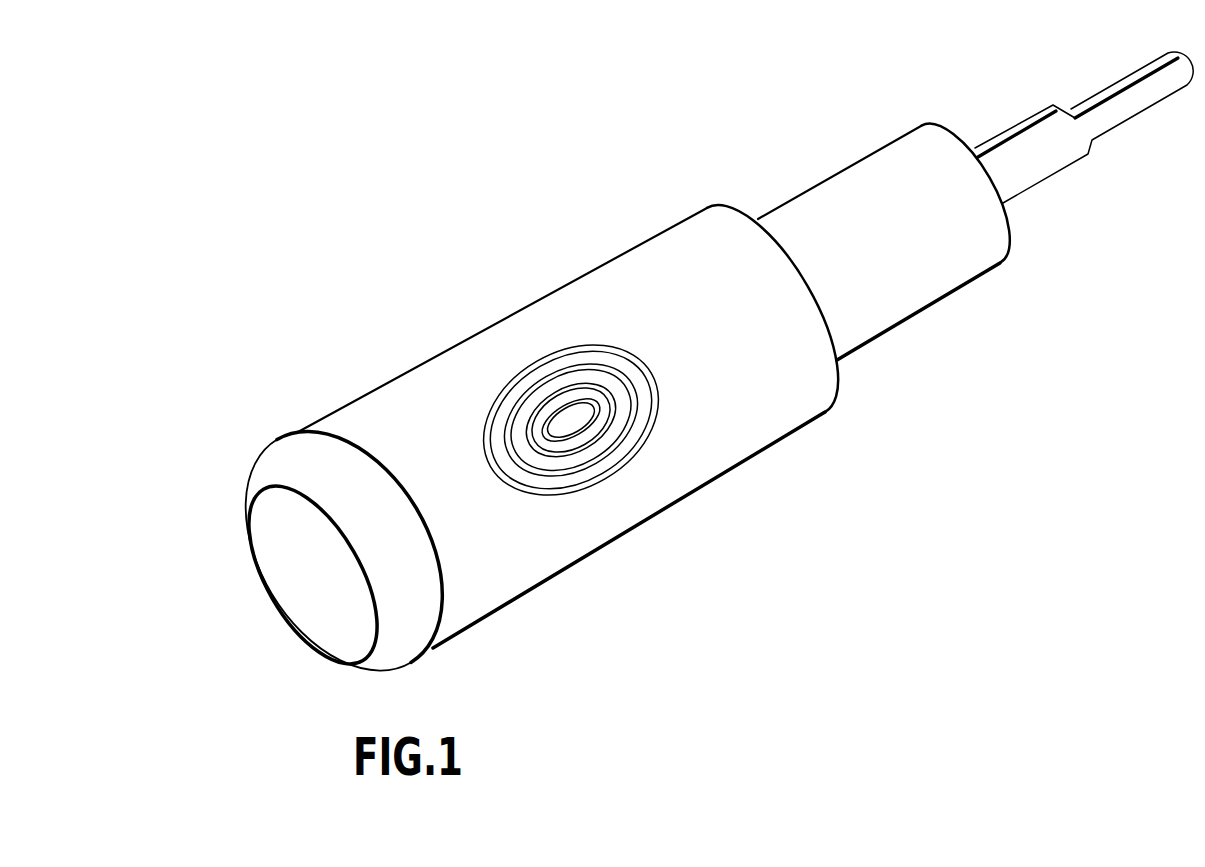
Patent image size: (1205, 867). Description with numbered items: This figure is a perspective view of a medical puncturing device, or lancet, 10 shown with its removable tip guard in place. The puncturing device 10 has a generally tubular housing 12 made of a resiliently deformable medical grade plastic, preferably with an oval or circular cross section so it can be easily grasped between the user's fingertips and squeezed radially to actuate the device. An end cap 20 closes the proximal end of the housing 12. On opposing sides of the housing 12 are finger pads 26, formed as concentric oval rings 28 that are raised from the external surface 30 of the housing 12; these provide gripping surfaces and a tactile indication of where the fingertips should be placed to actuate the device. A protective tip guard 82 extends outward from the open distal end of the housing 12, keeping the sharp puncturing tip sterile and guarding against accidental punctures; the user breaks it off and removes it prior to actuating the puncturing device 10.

The puncturing device 10 is at (366, 334).
The housing 12 is at (540, 298).
The end cap 20 is at (255, 535).
The finger pads 26 is at (597, 472).
The concentric oval rings 28 is at (645, 405).
The external surface 30 is at (724, 341).
The tip guard 82 is at (1052, 112).